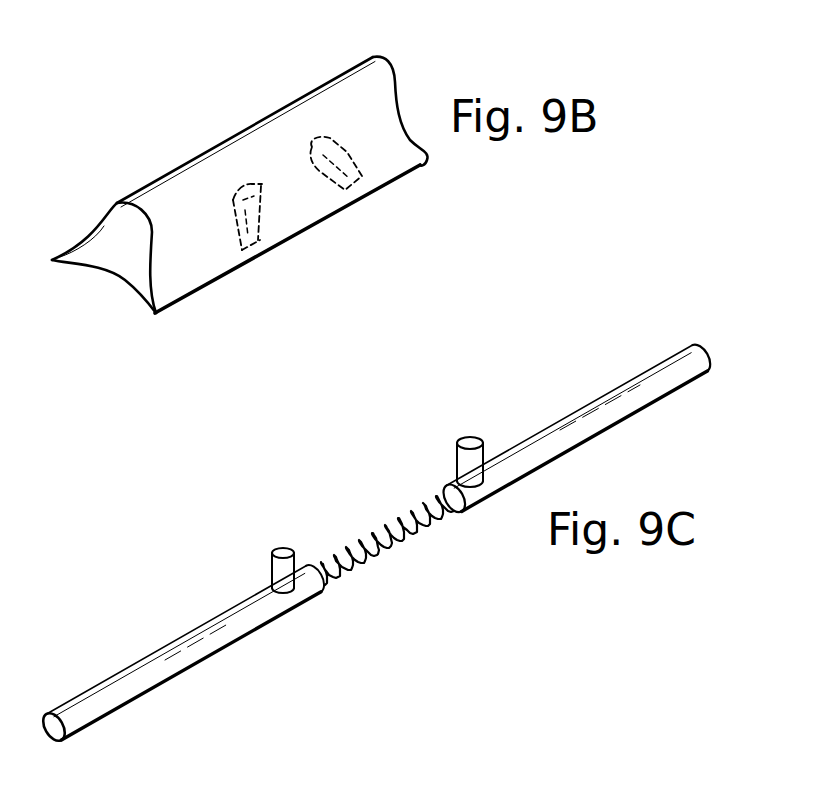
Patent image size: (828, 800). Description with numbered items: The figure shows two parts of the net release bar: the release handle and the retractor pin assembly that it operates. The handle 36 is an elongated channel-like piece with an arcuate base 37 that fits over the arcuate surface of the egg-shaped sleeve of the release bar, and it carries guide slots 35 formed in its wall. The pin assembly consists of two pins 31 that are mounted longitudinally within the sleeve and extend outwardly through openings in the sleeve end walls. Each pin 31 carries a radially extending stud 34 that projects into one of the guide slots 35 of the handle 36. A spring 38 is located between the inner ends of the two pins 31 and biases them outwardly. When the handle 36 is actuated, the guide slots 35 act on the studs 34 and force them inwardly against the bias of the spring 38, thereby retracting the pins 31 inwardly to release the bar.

In FIG. 9C, the pin 31 is at (157, 658).
In FIG. 9C, the radially extending stud 34 is at (285, 548).
In FIG. 9B, the guide slot 35 is at (232, 228).
In FIG. 9B, the handle 36 is at (318, 102).
In FIG. 9B, the arcuate base 37 is at (113, 277).
In FIG. 9C, the spring 38 is at (403, 542).